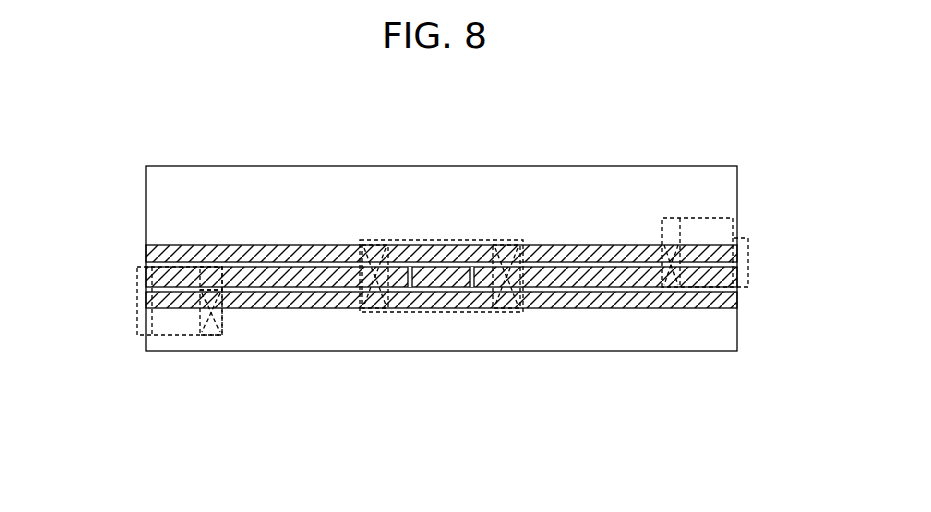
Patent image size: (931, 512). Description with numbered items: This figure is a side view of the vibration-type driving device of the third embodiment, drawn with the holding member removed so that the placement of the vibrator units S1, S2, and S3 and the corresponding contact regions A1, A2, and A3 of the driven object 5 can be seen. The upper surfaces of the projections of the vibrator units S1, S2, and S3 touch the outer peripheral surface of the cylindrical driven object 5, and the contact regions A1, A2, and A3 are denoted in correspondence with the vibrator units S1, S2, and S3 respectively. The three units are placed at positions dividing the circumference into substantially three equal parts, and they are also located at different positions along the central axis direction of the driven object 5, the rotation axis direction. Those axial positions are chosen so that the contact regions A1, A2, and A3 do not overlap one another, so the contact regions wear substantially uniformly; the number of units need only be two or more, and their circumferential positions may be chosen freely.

The driven object 5 is at (692, 188).
The contact region A1 is at (308, 277).
The contact region A2 is at (585, 252).
The contact region A3 is at (263, 305).
The vibrator unit S1 is at (438, 306).
The vibrator unit S2 is at (748, 246).
The vibrator unit S3 is at (137, 297).